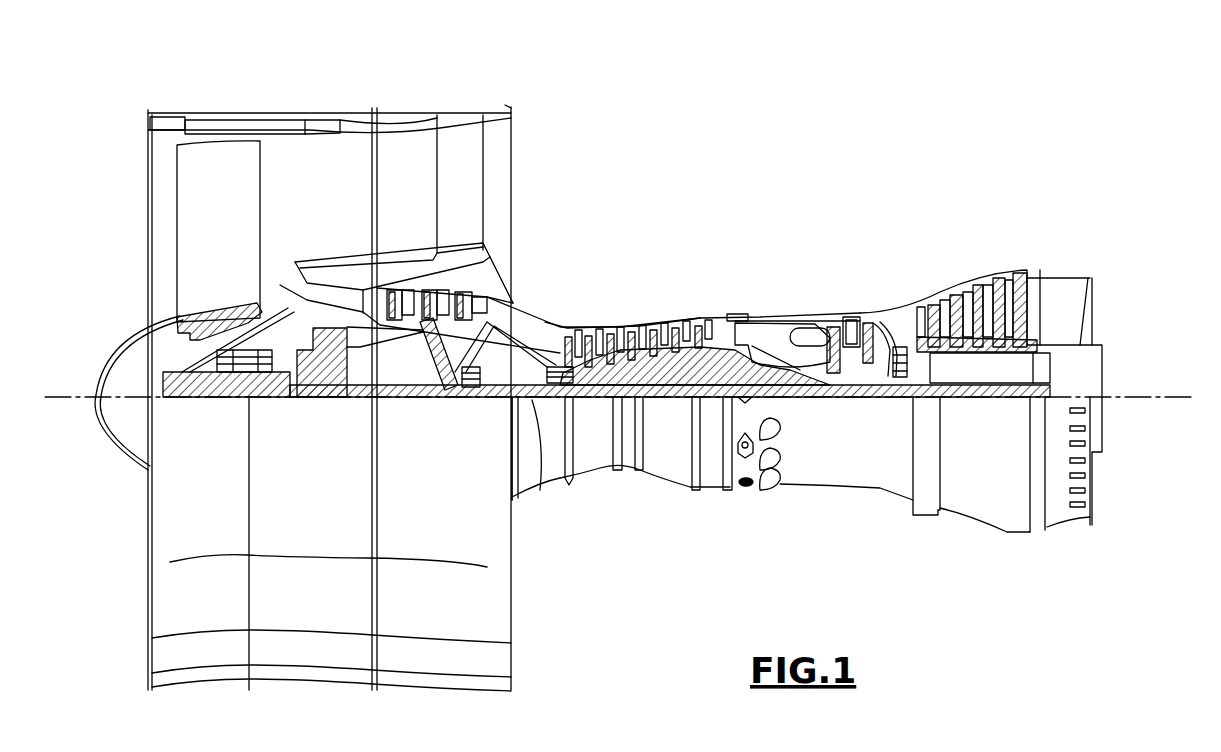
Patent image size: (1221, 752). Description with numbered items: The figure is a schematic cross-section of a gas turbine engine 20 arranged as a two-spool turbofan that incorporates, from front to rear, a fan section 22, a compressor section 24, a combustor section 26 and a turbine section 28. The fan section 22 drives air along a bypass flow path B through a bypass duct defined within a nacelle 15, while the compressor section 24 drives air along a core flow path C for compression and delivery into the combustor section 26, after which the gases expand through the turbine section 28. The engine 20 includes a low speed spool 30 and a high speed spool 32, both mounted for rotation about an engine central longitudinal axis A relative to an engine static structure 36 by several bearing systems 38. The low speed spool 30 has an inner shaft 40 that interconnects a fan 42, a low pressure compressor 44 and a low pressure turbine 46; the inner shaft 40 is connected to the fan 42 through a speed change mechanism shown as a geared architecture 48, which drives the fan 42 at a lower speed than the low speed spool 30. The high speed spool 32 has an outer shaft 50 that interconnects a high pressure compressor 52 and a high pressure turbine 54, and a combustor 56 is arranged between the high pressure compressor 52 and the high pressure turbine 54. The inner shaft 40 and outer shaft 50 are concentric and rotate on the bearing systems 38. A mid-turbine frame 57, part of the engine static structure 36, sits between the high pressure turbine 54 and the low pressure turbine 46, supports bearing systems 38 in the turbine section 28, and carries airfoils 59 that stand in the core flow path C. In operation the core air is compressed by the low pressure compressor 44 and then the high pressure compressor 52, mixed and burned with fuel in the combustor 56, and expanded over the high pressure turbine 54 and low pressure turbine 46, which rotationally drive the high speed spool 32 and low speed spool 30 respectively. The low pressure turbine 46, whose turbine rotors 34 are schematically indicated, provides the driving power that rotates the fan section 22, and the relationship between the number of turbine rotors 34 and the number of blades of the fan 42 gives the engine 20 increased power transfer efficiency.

The nacelle 15 is at (328, 120).
The gas turbine engine 20 is at (795, 160).
The fan section 22 is at (258, 100).
The compressor section 24 is at (561, 299).
The combustor section 26 is at (783, 292).
The turbine section 28 is at (933, 252).
The low speed spool 30 is at (668, 405).
The high speed spool 32 is at (713, 345).
The turbine rotors 34 is at (1013, 308).
The engine static structure 36 is at (710, 490).
The bearing systems 38 is at (472, 380).
The inner shaft 40 is at (532, 400).
The fan 42 is at (218, 231).
The low pressure compressor 44 is at (440, 305).
The low pressure turbine 46 is at (973, 283).
The geared architecture 48 is at (337, 378).
The outer shaft 50 is at (793, 396).
The high pressure compressor 52 is at (640, 335).
The high pressure turbine 54 is at (850, 318).
The combustor 56 is at (786, 335).
The mid-turbine frame 57 is at (893, 299).
The airfoils 59 is at (912, 336).
The engine central longitudinal axis A is at (1188, 396).
The bypass flow path B is at (290, 188).
The core flow path C is at (333, 292).